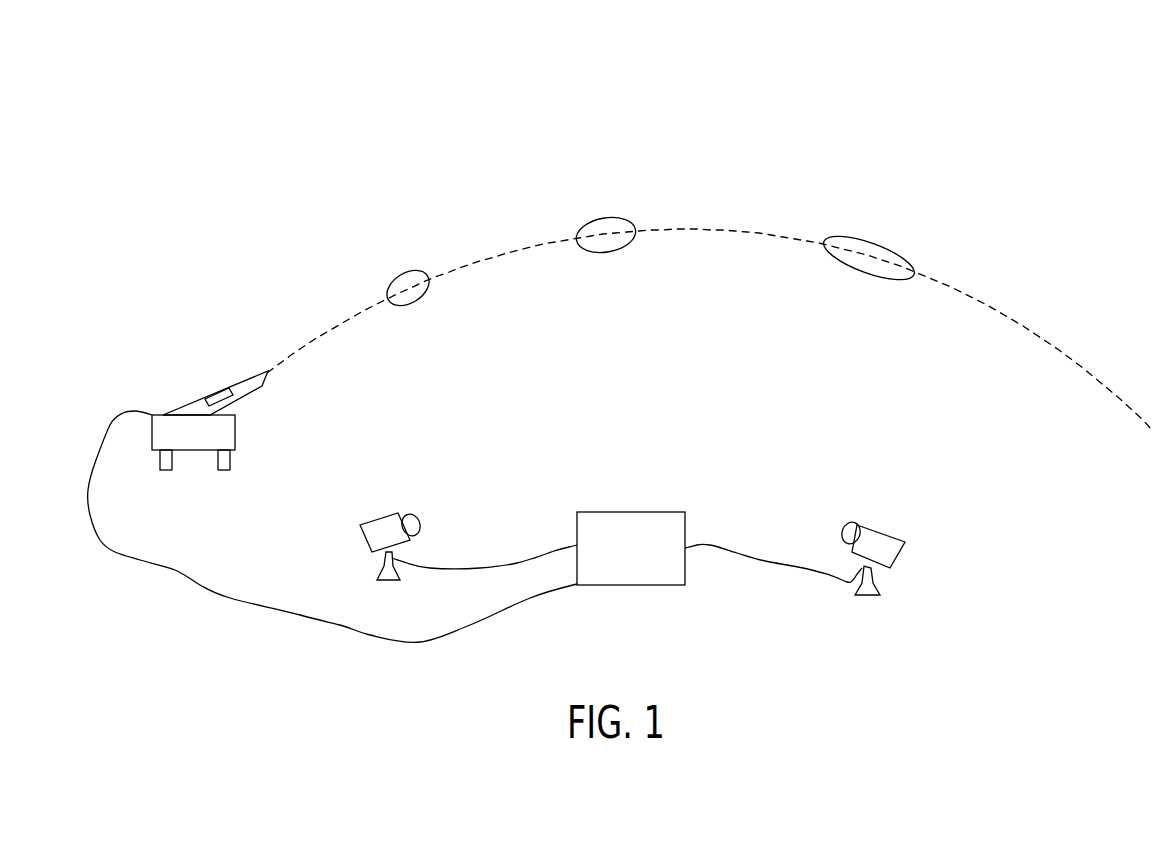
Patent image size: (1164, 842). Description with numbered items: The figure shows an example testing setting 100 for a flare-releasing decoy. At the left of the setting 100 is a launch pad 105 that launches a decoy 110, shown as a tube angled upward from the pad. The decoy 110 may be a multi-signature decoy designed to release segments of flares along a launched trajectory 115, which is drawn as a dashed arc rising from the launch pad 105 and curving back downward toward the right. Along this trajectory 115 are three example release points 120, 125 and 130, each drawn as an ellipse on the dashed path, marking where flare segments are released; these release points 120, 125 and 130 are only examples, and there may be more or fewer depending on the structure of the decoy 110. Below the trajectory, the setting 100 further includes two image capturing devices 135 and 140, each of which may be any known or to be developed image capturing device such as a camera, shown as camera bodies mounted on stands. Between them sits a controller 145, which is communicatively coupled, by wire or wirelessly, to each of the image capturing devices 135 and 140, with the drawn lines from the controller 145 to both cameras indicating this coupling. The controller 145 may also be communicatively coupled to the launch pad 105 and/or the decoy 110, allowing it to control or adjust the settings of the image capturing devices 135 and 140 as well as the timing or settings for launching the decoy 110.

The setting 100 is at (236, 134).
The launch pad 105 is at (237, 437).
The decoy 110 is at (245, 382).
The launched trajectory 115 is at (1077, 357).
The release point 120 is at (408, 273).
The release point 125 is at (603, 218).
The release point 130 is at (880, 242).
The image capturing device 135 is at (895, 533).
The image capturing device 140 is at (383, 515).
The controller 145 is at (648, 510).